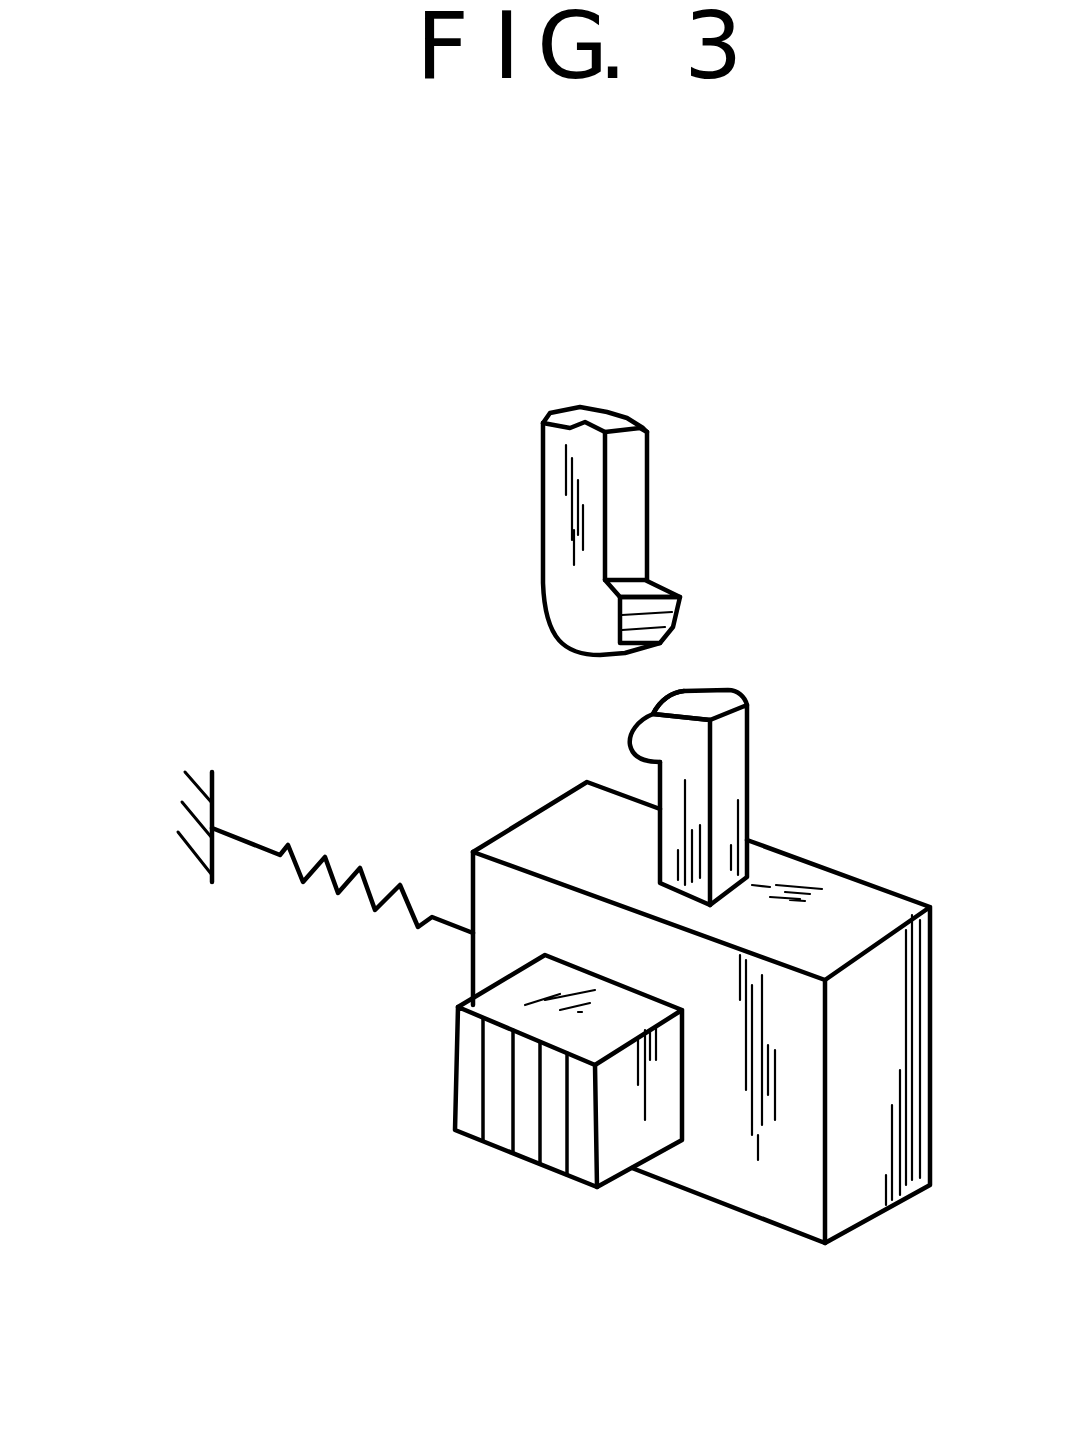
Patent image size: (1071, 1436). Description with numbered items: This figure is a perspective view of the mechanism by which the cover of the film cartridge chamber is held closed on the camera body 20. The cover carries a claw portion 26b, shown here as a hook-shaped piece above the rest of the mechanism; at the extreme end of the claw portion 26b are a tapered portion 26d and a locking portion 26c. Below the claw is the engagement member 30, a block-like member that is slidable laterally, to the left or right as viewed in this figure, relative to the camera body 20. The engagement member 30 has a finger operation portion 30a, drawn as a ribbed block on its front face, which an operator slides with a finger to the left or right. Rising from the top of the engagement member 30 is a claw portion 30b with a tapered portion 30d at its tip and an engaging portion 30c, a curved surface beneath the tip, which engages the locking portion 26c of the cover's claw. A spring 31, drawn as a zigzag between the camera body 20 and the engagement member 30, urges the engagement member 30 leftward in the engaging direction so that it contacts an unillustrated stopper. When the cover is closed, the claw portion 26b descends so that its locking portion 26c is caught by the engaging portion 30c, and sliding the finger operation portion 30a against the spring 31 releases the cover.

The camera body 20 is at (193, 836).
The claw portion 26b is at (625, 460).
The locking portion 26c is at (650, 580).
The tapered portion 26d is at (657, 618).
The engagement member 30 is at (772, 1202).
The finger operation portion 30a is at (502, 1133).
The claw portion 30b is at (733, 742).
The engaging portion 30c is at (645, 755).
The tapered portion 30d is at (650, 713).
The spring 31 is at (338, 893).